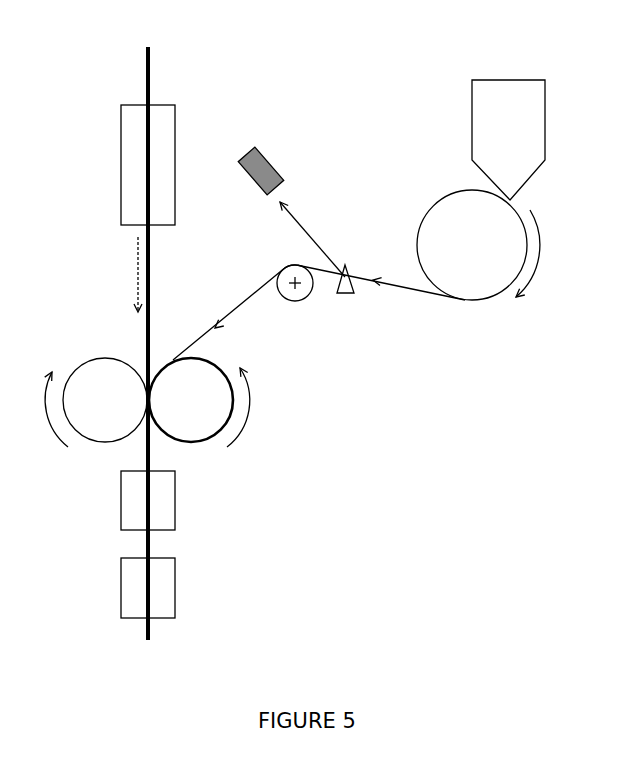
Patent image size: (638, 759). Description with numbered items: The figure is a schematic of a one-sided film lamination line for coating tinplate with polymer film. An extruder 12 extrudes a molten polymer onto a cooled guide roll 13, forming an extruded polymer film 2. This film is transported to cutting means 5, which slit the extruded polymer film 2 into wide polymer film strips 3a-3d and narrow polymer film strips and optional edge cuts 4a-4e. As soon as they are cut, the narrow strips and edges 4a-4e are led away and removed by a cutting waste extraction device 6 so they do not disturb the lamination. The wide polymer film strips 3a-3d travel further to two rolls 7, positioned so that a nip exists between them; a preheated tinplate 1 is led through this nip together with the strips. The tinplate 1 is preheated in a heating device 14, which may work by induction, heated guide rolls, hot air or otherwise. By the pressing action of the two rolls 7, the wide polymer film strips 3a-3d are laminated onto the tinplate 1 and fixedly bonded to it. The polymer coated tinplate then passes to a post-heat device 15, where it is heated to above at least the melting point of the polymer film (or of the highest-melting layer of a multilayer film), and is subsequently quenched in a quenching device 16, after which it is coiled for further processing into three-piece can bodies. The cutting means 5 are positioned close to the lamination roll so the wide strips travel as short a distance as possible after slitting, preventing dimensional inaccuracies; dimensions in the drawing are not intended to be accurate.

The tinplate 1 is at (152, 74).
The extruded polymer film 2 is at (430, 313).
The wide polymer film strips 3a-3d is at (183, 352).
The narrow polymer film strips and edges 4a-4e is at (323, 248).
The cutting means 5 is at (345, 308).
The cutting waste extraction device 6 is at (279, 149).
The rolls 7 is at (147, 402).
The extruder 12 is at (508, 140).
The cooled guide roll 13 is at (478, 245).
The heating device 14 is at (175, 158).
The post-heat device 15 is at (176, 507).
The quenching device 16 is at (176, 598).